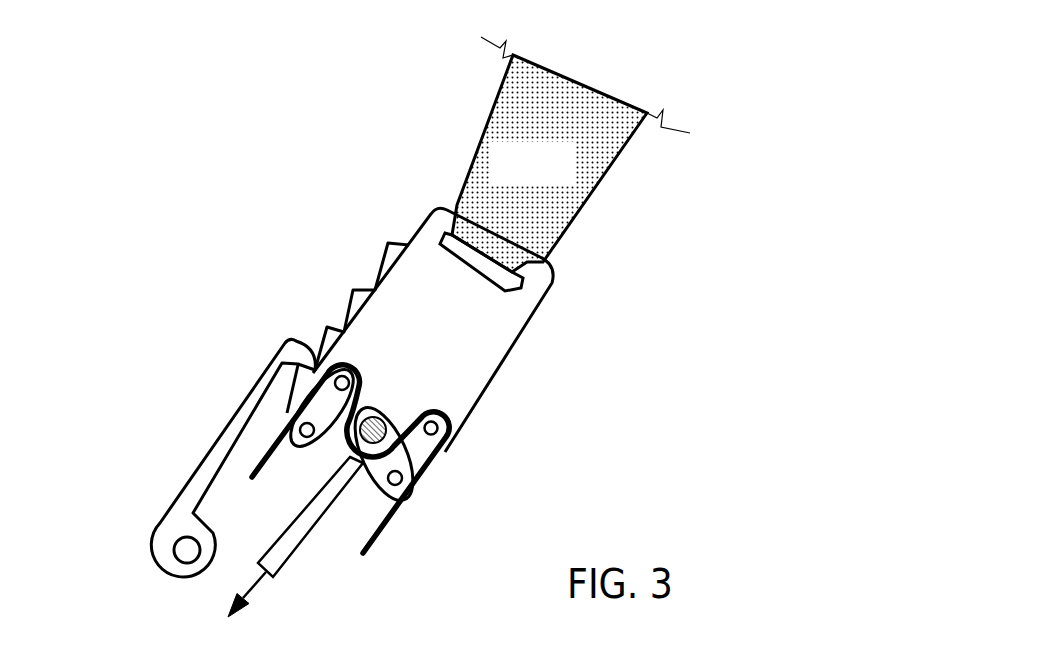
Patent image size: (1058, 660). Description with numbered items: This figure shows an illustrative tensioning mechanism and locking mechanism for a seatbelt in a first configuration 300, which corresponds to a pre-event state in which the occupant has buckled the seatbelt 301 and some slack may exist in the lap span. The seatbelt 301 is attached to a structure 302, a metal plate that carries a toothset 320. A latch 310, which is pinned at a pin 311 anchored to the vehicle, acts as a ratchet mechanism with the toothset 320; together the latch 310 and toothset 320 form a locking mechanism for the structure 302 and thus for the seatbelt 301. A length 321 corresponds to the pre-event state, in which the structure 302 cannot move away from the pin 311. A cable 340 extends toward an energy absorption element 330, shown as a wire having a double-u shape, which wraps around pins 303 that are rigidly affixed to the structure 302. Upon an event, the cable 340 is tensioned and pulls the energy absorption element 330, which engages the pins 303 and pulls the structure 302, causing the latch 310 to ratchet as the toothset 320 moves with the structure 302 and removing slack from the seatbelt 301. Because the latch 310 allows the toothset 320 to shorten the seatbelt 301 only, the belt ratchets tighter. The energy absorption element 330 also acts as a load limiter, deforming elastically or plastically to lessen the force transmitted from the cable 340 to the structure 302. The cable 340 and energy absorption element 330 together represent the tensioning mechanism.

The first configuration 300 is at (436, 327).
The seatbelt 301 is at (550, 176).
The structure 302 is at (450, 346).
The pins 303 is at (450, 447).
The latch 310 is at (190, 458).
The pin 311 is at (185, 545).
The toothset 320 is at (327, 268).
The length 321 is at (394, 242).
The energy absorption element 330 is at (384, 536).
The cable 340 is at (299, 543).